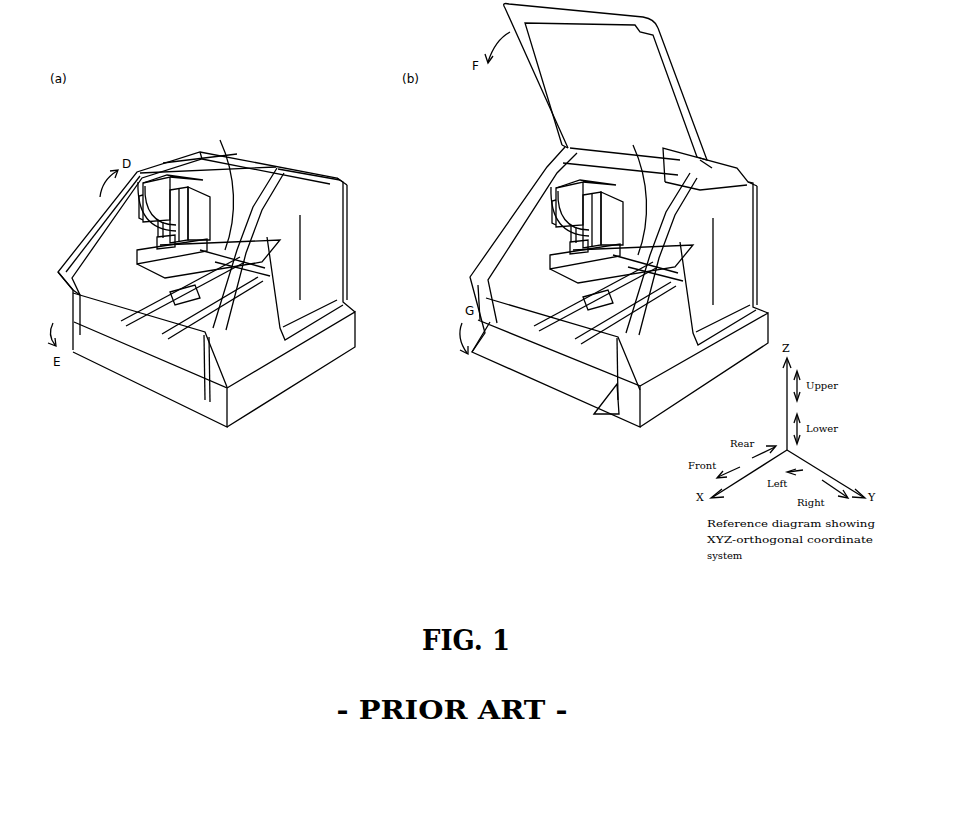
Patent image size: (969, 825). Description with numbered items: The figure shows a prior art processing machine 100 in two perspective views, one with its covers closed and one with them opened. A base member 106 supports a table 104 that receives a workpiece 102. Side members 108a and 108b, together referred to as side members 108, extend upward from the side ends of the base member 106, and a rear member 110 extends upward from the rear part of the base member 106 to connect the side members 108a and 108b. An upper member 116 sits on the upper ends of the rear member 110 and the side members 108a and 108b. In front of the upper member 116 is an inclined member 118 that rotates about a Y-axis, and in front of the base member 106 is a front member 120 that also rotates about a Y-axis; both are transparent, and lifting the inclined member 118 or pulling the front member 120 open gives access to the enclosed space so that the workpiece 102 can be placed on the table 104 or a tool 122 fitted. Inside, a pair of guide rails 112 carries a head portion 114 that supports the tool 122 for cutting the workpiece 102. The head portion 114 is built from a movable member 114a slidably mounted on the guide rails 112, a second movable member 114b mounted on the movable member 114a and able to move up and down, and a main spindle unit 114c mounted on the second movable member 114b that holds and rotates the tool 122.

The processing machine 100 is at (322, 128).
The workpiece 102 is at (180, 312).
The table 104 is at (177, 297).
The base member 106 is at (265, 397).
The side members 108 is at (477, 293).
The side member 108a is at (265, 347).
The side member 108b is at (88, 238).
The rear member 110 is at (343, 182).
The guide rails 112 is at (222, 262).
The head portion 114 is at (399, 170).
The movable member 114a is at (210, 200).
The second movable member 114b is at (185, 176).
The main spindle unit 114c is at (138, 180).
The upper member 116 is at (292, 168).
The inclined member 118 is at (66, 283).
The front member 120 is at (189, 365).
The tool 122 is at (153, 243).